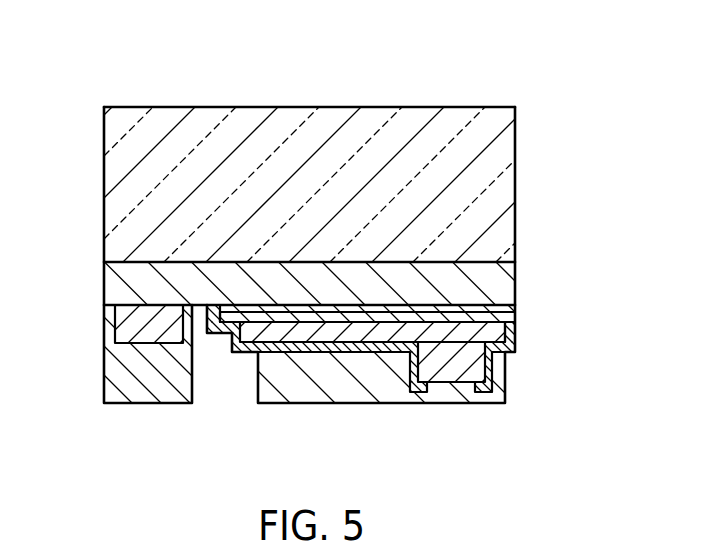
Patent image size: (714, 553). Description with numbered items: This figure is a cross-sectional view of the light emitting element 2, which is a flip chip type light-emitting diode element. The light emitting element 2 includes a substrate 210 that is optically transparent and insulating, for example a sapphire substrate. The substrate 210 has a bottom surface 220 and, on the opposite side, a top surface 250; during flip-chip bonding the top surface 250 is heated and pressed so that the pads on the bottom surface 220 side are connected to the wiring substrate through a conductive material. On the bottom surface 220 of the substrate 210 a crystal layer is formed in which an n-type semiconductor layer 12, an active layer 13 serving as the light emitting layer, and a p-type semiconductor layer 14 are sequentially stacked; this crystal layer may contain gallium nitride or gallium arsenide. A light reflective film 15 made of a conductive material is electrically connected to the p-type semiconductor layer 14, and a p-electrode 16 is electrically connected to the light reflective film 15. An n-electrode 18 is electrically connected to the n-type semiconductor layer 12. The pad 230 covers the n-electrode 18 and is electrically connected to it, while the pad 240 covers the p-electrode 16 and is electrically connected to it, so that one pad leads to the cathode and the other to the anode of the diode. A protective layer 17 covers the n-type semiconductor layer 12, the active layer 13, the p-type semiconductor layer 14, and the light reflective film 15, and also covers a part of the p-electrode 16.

The light emitting element 2 is at (546, 96).
The n-type semiconductor layer 12 is at (515, 275).
The active layer 13 is at (478, 305).
The p-type semiconductor layer 14 is at (505, 318).
The light reflective film 15 is at (368, 333).
The p-electrode 16 is at (452, 365).
The protective layer 17 is at (488, 372).
The n-electrode 18 is at (133, 320).
The substrate 210 is at (515, 183).
The bottom surface 220 is at (134, 262).
The pad 230 is at (150, 403).
The pad 240 is at (300, 403).
The top surface 250 is at (134, 106).